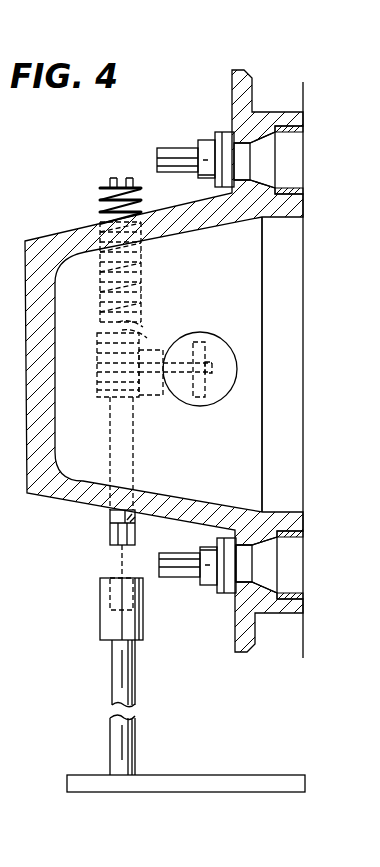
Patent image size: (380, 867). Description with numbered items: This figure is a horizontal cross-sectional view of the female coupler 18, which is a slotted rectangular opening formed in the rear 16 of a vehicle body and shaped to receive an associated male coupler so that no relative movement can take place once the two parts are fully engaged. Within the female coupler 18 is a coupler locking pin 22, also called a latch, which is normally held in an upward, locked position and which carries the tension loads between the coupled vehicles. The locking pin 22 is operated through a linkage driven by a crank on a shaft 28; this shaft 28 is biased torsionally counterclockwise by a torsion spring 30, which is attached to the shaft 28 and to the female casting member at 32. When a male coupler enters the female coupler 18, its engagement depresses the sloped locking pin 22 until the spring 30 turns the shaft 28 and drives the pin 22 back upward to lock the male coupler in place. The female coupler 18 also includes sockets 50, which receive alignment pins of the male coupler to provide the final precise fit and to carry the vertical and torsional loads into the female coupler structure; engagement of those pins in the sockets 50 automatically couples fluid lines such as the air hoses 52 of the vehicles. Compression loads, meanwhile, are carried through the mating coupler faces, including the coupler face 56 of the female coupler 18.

The rear 16 is at (304, 645).
The female coupler 18 is at (316, 492).
The coupler locking pin 22 is at (213, 390).
The shaft 28 is at (100, 532).
The torsion spring 30 is at (86, 193).
The female casting member attachment point 32 is at (154, 318).
The sockets 50 is at (291, 178).
The air hoses 52 is at (177, 147).
The coupler face 56 is at (303, 418).